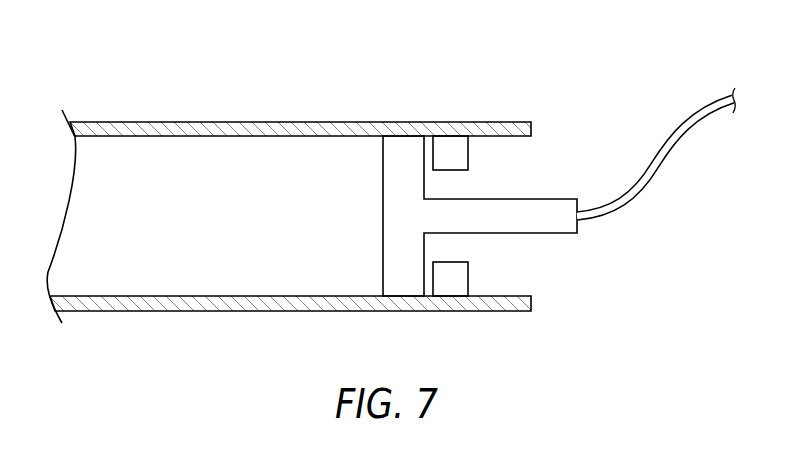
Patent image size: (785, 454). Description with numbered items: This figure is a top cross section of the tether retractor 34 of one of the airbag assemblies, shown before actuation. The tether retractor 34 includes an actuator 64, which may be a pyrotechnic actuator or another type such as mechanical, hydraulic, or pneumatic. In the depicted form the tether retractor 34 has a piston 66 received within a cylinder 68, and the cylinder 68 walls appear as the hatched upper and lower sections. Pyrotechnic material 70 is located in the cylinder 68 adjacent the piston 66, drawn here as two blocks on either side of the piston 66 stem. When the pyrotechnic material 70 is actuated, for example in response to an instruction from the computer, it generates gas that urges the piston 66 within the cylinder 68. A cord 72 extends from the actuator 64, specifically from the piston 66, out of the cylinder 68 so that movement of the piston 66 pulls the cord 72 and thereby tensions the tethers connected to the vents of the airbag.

The tether retractor 34 is at (281, 78).
The actuator 64 is at (449, 172).
The piston 66 is at (382, 252).
The cylinder 68 is at (250, 312).
The pyrotechnic material 70 is at (459, 153).
The cord 72 is at (627, 207).